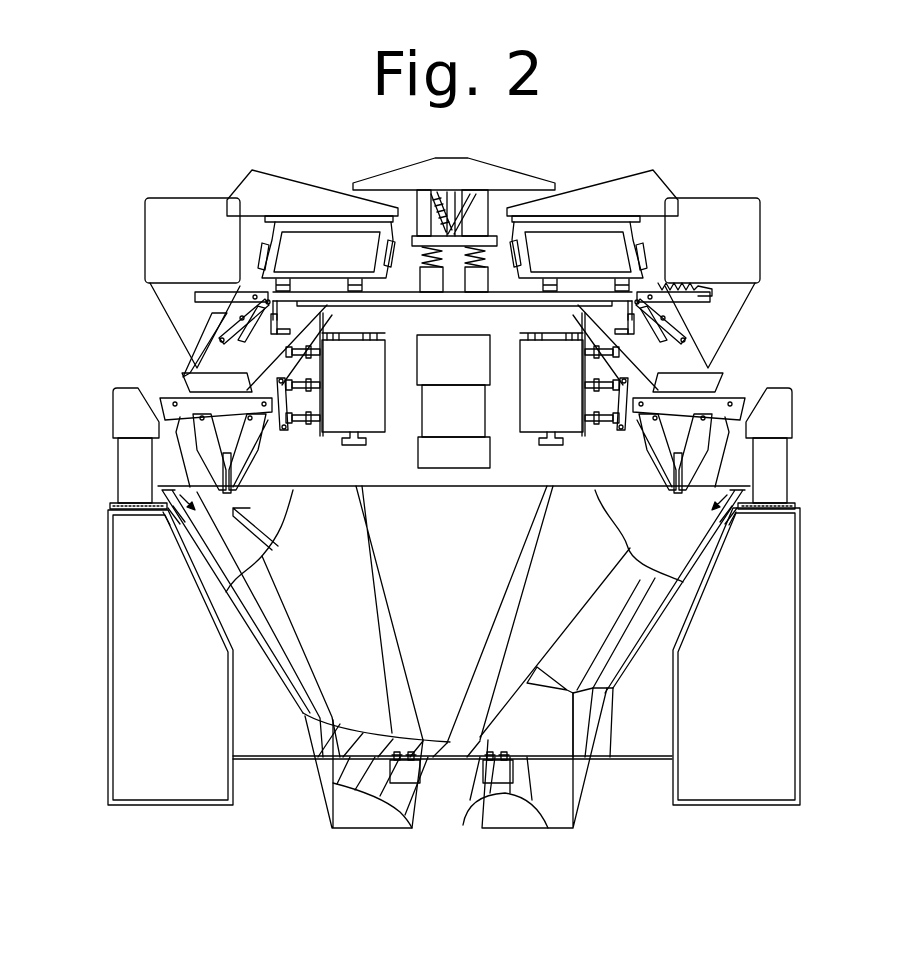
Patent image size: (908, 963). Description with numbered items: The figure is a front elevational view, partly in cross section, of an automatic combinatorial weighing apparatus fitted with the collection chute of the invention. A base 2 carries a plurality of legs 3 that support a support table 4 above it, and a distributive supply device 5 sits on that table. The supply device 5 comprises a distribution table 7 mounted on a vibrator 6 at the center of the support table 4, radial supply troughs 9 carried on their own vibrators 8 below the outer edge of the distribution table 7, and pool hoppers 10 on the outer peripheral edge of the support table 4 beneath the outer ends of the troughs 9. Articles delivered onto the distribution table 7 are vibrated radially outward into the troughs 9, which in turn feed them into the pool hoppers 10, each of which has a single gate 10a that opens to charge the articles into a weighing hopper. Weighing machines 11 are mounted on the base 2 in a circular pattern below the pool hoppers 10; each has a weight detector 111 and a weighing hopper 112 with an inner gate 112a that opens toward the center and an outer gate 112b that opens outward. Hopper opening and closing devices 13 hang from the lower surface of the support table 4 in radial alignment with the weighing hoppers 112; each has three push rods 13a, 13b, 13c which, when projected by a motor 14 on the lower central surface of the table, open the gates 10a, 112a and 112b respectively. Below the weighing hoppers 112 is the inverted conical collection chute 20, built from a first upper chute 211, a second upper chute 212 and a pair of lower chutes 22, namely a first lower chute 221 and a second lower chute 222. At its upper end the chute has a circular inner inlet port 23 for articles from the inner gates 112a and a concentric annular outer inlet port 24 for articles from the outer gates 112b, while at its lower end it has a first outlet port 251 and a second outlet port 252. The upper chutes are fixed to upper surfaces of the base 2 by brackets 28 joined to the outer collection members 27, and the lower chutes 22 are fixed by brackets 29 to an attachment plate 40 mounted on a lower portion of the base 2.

The base 2 is at (800, 620).
The legs 3 is at (203, 460).
The support table 4 is at (403, 292).
The distributive supply device 5 is at (475, 203).
The vibrator 6 is at (468, 212).
The distribution table 7 is at (492, 182).
The vibrators 8 is at (378, 237).
The radial supply troughs 9 is at (283, 187).
The pool hoppers 10 is at (452, 287).
The gate 10a is at (208, 340).
The weighing machines 11 is at (451, 416).
The weight detector 111 is at (118, 420).
The weighing hopper 112 is at (183, 380).
The inner gate 112a is at (248, 442).
The outer gate 112b is at (210, 438).
The hopper opening and closing devices 13 is at (373, 383).
The push rod 13a is at (253, 318).
The push rod 13b is at (287, 370).
The push rod 13c is at (297, 432).
The motor 14 is at (435, 413).
The collection chute 20 is at (486, 679).
The first upper chute 211 is at (330, 650).
The second upper chute 212 is at (617, 660).
The lower chutes 22 is at (445, 770).
The first lower chute 221 is at (335, 772).
The second lower chute 222 is at (568, 770).
The inner inlet port 23 is at (253, 524).
The outer inlet port 24 is at (158, 458).
The first outlet port 251 is at (362, 818).
The second outlet port 252 is at (498, 818).
The outer collection members 27 is at (190, 530).
The brackets 28 is at (170, 523).
The brackets 29 is at (407, 780).
The attachment plate 40 is at (613, 755).